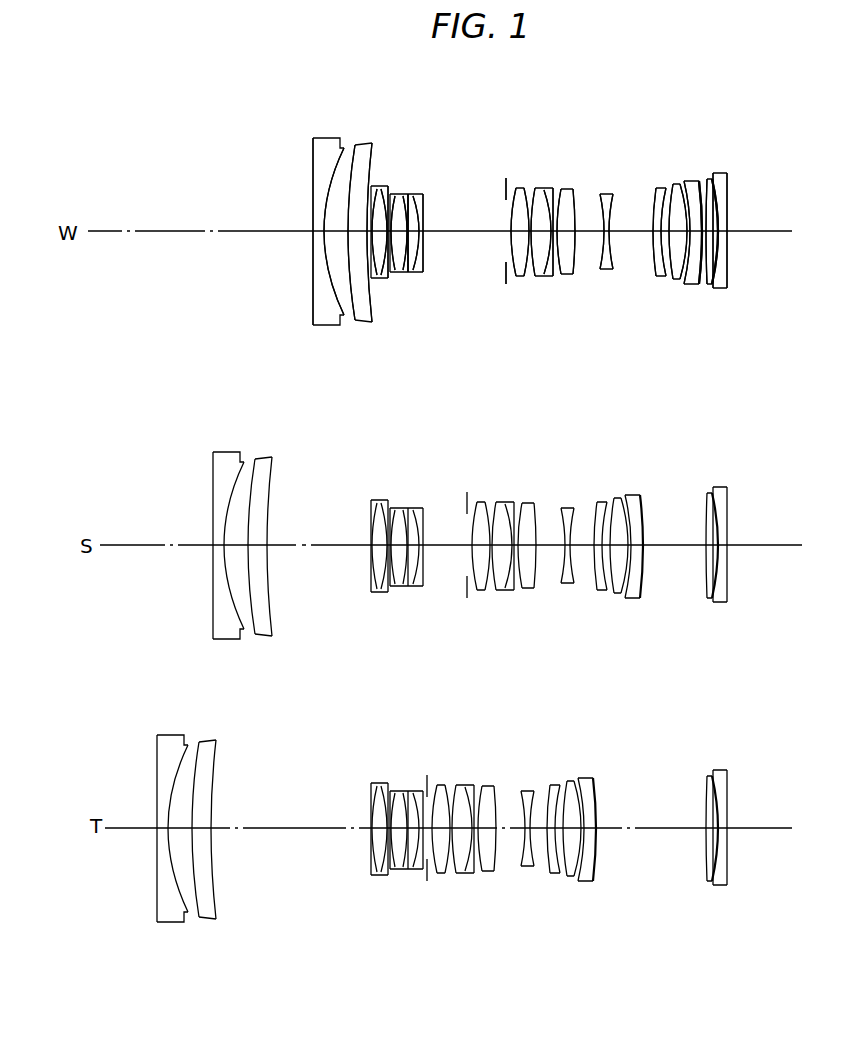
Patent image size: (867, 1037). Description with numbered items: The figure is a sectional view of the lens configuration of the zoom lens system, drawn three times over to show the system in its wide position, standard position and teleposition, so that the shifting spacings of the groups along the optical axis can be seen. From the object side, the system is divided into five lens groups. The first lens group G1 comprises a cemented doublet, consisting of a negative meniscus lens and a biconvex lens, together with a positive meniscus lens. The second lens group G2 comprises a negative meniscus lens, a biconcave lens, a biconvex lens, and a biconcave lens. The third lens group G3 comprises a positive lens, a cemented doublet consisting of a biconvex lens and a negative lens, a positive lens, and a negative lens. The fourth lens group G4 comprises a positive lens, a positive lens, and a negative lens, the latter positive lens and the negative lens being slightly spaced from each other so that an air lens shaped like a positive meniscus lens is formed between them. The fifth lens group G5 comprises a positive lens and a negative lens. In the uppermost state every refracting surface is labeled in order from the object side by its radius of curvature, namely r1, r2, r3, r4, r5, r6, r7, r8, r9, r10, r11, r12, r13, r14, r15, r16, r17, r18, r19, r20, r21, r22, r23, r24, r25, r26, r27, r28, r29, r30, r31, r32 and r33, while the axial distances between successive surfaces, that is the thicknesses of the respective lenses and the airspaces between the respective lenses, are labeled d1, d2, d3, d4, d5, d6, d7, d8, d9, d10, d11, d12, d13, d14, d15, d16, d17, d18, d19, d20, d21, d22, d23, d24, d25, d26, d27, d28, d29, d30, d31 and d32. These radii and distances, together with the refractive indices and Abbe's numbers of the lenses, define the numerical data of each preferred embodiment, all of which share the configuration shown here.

The radius of curvature of lens surface r1 is at (313, 158).
The radius of curvature of lens surface r2 is at (323, 143).
The radius of curvature of lens surface r3 is at (333, 138).
The radius of curvature of lens surface r4 is at (350, 157).
The radius of curvature of lens surface r5 is at (362, 150).
The radius of curvature of lens surface r6 is at (372, 148).
The radius of curvature of lens surface r7 is at (382, 186).
The radius of curvature of lens surface r8 is at (392, 194).
The radius of curvature of lens surface r9 is at (400, 194).
The radius of curvature of lens surface r10 is at (406, 194).
The radius of curvature of lens surface r11 is at (410, 195).
The radius of curvature of lens surface r12 is at (423, 194).
The radius of curvature of lens surface r13 is at (424, 200).
The radius of curvature of lens surface r14 is at (506, 182).
The radius of curvature of lens surface r15 is at (514, 190).
The radius of curvature of lens surface r16 is at (520, 188).
The radius of curvature of lens surface r17 is at (534, 186).
The radius of curvature of lens surface r18 is at (541, 190).
The radius of curvature of lens surface r19 is at (548, 187).
The radius of curvature of lens surface r20 is at (560, 188).
The radius of curvature of lens surface r21 is at (574, 188).
The radius of curvature of lens surface r22 is at (597, 193).
The radius of curvature of lens surface r23 is at (611, 193).
The radius of curvature of lens surface r24 is at (653, 195).
The radius of curvature of lens surface r25 is at (657, 190).
The radius of curvature of lens surface r26 is at (668, 186).
The radius of curvature of lens surface r27 is at (676, 186).
The radius of curvature of lens surface r28 is at (688, 190).
The radius of curvature of lens surface r29 is at (698, 184).
The radius of curvature of lens surface r30 is at (716, 176).
The radius of curvature of lens surface r31 is at (727, 178).
The radius of curvature of lens surface r32 is at (732, 175).
The radius of curvature of lens surface r33 is at (723, 183).
The lens thickness or airspace d1 is at (322, 235).
The lens thickness or airspace d2 is at (333, 231).
The lens thickness or airspace d3 is at (345, 233).
The lens thickness or airspace d4 is at (351, 312).
The lens thickness or airspace d5 is at (368, 314).
The lens thickness or airspace d6 is at (374, 282).
The lens thickness or airspace d7 is at (382, 262).
The lens thickness or airspace d8 is at (397, 271).
The lens thickness or airspace d9 is at (405, 271).
The lens thickness or airspace d10 is at (419, 268).
The lens thickness or airspace d11 is at (418, 236).
The lens thickness or airspace d12 is at (418, 232).
The lens thickness or airspace d13 is at (468, 232).
The lens thickness or airspace d14 is at (509, 233).
The lens thickness or airspace d15 is at (514, 241).
The lens thickness or airspace d16 is at (520, 250).
The lens thickness or airspace d17 is at (534, 250).
The lens thickness or airspace d18 is at (548, 252).
The lens thickness or airspace d19 is at (560, 252).
The lens thickness or airspace d20 is at (574, 256).
The lens thickness or airspace d21 is at (596, 240).
The lens thickness or airspace d22 is at (608, 256).
The lens thickness or airspace d23 is at (630, 234).
The lens thickness or airspace d24 is at (650, 263).
The lens thickness or airspace d25 is at (668, 229).
The lens thickness or airspace d26 is at (661, 271).
The lens thickness or airspace d27 is at (690, 228).
The lens thickness or airspace d28 is at (687, 273).
The lens thickness or airspace d29 is at (700, 279).
The lens thickness or airspace d30 is at (715, 277).
The lens thickness or airspace d31 is at (724, 263).
The lens thickness or airspace d32 is at (724, 238).
The first lens group G1 is at (370, 348).
The second lens group G2 is at (436, 346).
The third lens group G3 is at (623, 345).
The fourth lens group G4 is at (700, 348).
The fifth lens group G5 is at (738, 345).